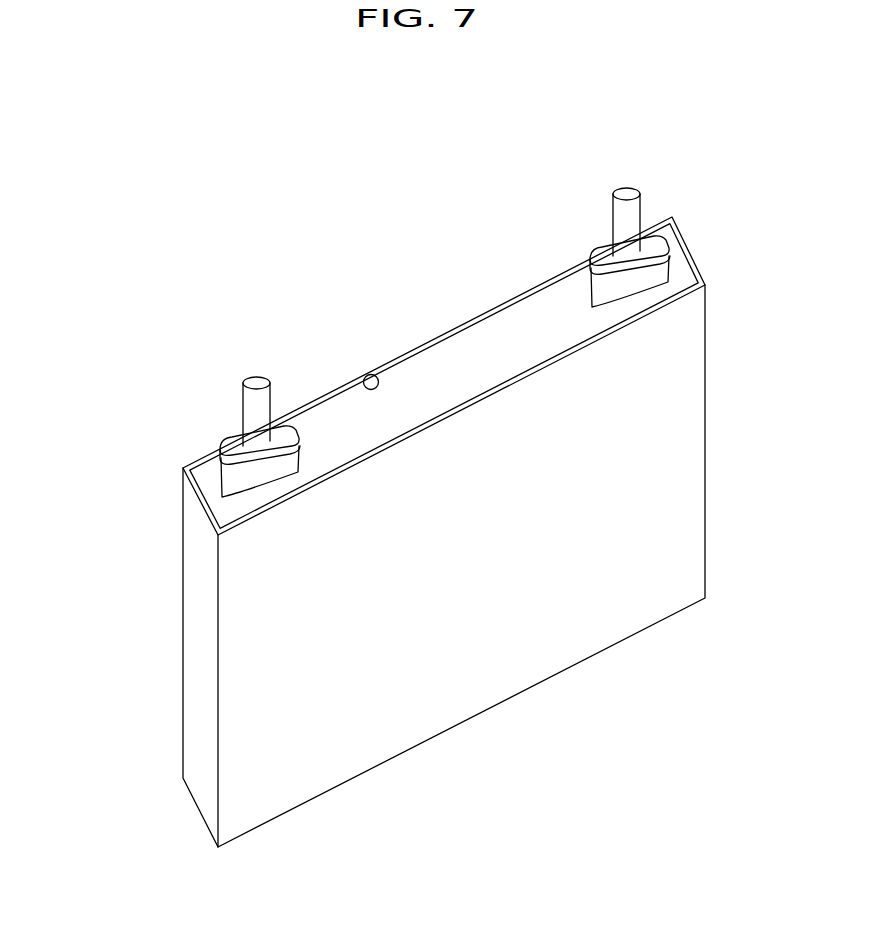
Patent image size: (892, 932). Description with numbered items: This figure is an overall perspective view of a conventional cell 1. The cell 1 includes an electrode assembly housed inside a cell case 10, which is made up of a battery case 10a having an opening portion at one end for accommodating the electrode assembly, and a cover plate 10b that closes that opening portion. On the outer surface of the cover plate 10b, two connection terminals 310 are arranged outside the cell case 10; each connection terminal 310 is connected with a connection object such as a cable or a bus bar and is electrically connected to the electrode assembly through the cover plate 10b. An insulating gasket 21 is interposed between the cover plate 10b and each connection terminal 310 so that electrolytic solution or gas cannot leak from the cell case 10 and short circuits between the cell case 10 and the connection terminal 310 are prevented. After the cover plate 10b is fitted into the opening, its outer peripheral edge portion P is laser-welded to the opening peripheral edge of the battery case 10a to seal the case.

The cell 1 is at (533, 142).
The cell case 10 is at (680, 630).
The battery case 10a is at (457, 607).
The cover plate 10b is at (453, 383).
The insulating gasket 21 is at (257, 480).
The connection terminal 310 is at (233, 424).
The peripheral edge portion P is at (365, 372).